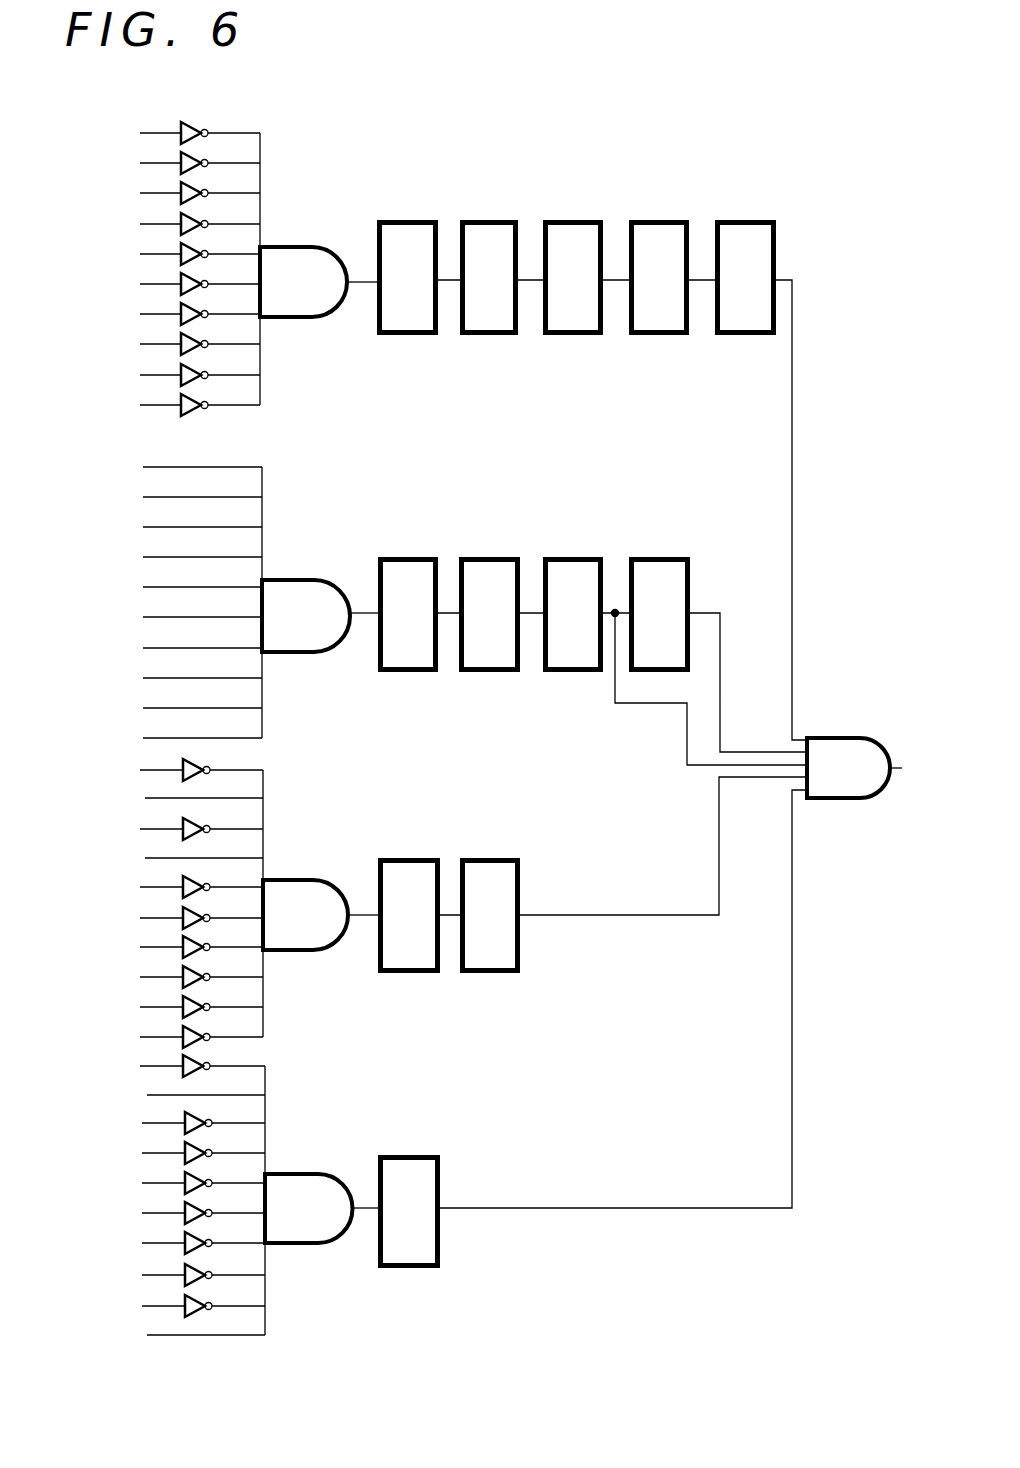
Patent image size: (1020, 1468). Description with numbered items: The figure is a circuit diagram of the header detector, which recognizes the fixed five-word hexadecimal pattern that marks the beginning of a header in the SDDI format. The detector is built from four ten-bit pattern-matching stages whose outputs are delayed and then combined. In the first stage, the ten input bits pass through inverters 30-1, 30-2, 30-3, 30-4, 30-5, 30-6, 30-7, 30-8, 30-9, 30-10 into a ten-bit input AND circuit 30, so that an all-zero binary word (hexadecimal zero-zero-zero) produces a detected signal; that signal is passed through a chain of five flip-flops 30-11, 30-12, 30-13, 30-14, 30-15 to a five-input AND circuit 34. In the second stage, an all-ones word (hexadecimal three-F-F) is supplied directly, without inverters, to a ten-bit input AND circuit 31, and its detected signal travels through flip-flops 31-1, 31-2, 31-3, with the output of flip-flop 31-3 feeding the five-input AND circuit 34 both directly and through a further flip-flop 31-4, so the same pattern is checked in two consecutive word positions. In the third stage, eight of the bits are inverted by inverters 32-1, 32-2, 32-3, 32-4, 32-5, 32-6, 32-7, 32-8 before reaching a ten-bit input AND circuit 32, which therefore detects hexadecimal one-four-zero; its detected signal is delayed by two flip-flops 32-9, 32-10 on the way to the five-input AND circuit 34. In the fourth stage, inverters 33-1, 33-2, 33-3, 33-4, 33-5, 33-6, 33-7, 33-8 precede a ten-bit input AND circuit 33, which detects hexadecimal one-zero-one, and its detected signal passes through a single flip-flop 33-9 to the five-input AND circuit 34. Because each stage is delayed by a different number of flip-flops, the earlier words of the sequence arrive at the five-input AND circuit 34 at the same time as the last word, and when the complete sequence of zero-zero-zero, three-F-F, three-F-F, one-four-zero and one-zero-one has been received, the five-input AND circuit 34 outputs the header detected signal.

The 10-bit input AND circuit 30 is at (305, 247).
The 10-bit input AND circuit 31 is at (306, 580).
The 10-bit input AND circuit 32 is at (306, 880).
The 10-bit input AND circuit 33 is at (314, 1174).
The 5-input AND circuit 34 is at (848, 738).
The inverter 30-1 is at (181, 125).
The inverter 30-2 is at (181, 155).
The inverter 30-3 is at (181, 185).
The inverter 30-4 is at (181, 216).
The inverter 30-5 is at (181, 246).
The inverter 30-6 is at (181, 276).
The inverter 30-7 is at (181, 306).
The inverter 30-8 is at (181, 336).
The inverter 30-9 is at (181, 367).
The inverter 30-10 is at (181, 397).
The flip-flop 30-11 is at (398, 220).
The flip-flop 30-12 is at (482, 220).
The flip-flop 30-13 is at (566, 220).
The flip-flop 30-14 is at (655, 220).
The flip-flop 30-15 is at (736, 220).
The flip-flop 31-1 is at (400, 557).
The flip-flop 31-2 is at (486, 557).
The flip-flop 31-3 is at (568, 557).
The flip-flop 31-4 is at (654, 557).
The inverter 32-1 is at (183, 762).
The inverter 32-2 is at (183, 821).
The inverter 32-3 is at (183, 879).
The inverter 32-4 is at (183, 910).
The inverter 32-5 is at (183, 939).
The inverter 32-6 is at (183, 969).
The inverter 32-7 is at (183, 999).
The inverter 32-8 is at (183, 1029).
The flip-flop 32-9 is at (400, 858).
The flip-flop 32-10 is at (490, 858).
The inverter 33-1 is at (183, 1058).
The inverter 33-2 is at (185, 1115).
The inverter 33-3 is at (185, 1145).
The inverter 33-4 is at (185, 1175).
The inverter 33-5 is at (185, 1205).
The inverter 33-6 is at (185, 1235).
The inverter 33-7 is at (185, 1267).
The inverter 33-8 is at (185, 1298).
The flip-flop 33-9 is at (402, 1155).